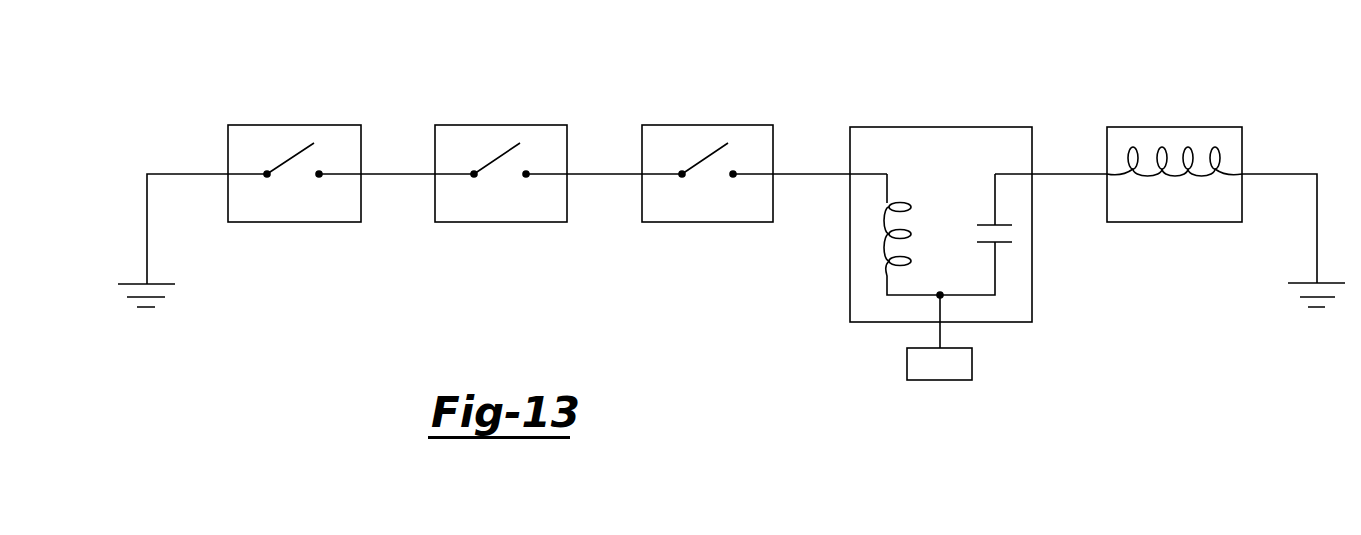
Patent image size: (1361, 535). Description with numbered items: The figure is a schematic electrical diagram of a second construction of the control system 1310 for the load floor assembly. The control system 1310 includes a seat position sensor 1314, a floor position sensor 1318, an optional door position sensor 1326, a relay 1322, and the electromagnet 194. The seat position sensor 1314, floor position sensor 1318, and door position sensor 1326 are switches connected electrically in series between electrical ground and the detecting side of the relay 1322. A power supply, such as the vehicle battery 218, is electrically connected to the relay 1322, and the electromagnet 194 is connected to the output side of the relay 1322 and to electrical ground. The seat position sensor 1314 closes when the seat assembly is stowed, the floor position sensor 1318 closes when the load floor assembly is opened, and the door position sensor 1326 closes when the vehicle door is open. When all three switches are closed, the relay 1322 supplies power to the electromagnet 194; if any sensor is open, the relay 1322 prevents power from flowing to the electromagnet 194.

The control system 1310 is at (795, 318).
The seat position sensor 1314 is at (293, 222).
The floor position sensor 1318 is at (500, 222).
The door position sensor 1326 is at (706, 222).
The relay 1322 is at (940, 127).
The vehicle battery 218 is at (952, 380).
The electromagnet 194 is at (1173, 222).